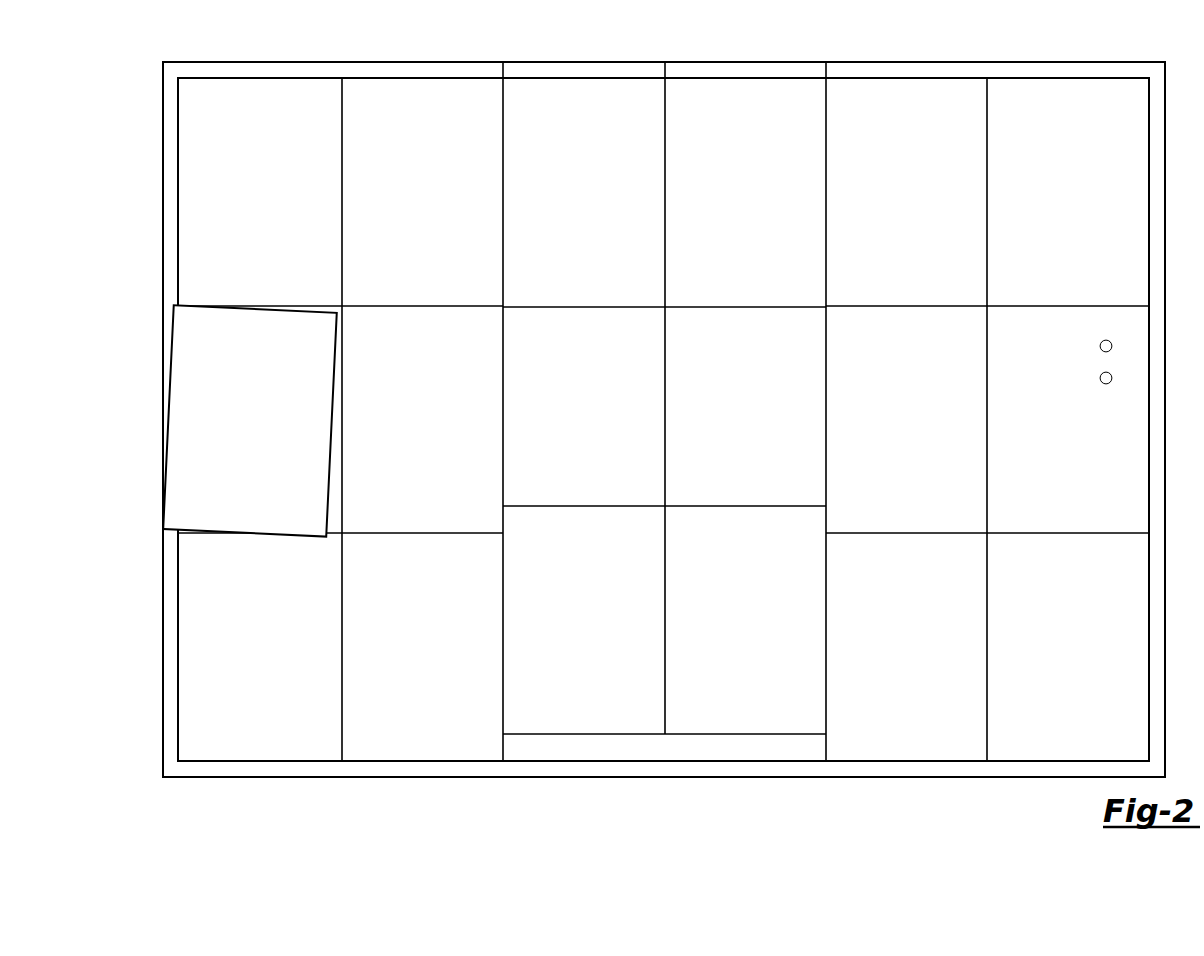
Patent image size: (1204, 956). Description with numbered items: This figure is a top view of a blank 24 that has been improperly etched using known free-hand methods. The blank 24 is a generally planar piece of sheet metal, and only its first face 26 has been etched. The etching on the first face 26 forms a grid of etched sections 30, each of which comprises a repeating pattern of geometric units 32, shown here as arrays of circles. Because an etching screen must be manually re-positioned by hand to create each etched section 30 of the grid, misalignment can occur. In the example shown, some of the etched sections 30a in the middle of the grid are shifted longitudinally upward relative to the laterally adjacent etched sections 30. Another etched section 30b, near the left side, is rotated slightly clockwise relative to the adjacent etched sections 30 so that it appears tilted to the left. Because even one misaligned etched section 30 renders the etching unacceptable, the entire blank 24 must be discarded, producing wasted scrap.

The blank 24 is at (992, 801).
The first face 26 is at (262, 722).
The etched sections 30 is at (267, 182).
The shifted etched sections 30a is at (694, 692).
The rotated etched section 30b is at (200, 420).
The geometric units 32 is at (1108, 346).